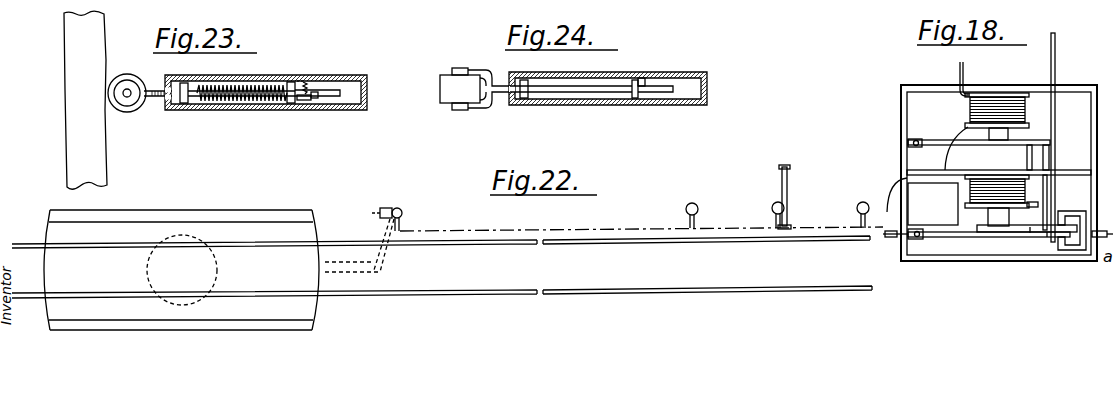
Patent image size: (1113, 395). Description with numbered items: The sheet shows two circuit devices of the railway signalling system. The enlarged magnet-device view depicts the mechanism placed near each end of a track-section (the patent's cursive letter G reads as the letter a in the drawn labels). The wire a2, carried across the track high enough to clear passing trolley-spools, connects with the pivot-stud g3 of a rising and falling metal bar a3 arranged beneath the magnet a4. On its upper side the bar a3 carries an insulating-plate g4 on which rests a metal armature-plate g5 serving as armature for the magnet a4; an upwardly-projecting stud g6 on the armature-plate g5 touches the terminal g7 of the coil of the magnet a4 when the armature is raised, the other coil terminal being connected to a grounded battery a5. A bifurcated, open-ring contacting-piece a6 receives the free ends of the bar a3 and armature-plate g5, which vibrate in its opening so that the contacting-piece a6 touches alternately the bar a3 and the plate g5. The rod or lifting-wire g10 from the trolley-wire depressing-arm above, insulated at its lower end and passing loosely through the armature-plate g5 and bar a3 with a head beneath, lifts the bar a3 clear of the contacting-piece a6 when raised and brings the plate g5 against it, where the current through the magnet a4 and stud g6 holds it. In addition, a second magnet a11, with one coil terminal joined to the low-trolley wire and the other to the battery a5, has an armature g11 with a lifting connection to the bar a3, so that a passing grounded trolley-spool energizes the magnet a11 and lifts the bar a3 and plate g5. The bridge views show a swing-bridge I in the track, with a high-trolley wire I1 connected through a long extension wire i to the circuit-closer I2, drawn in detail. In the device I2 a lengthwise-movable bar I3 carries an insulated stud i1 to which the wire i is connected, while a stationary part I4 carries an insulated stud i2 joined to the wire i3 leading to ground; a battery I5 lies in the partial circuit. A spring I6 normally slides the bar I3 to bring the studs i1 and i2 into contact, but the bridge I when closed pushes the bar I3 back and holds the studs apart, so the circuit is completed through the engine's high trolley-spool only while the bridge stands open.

In FIG. 22, the swing-bridge I is at (181, 270).
In FIG. 22, the high-trolley wire I1 is at (760, 198).
In FIG. 23, the circuit-closing device I2 is at (266, 77).
In FIG. 24, the circuit-closing device I2 is at (643, 78).
In FIG. 22, the circuit-closing device I2 is at (359, 253).
In FIG. 23, the lengthwise-movable bar I3 is at (327, 92).
In FIG. 24, the lengthwise-movable bar I3 is at (655, 93).
In FIG. 23, the stationary part I4 is at (290, 97).
In FIG. 22, the battery I5 is at (388, 208).
In FIG. 23, the spring I6 is at (268, 100).
In FIG. 23, the extension wire i is at (310, 78).
In FIG. 22, the extension wire i is at (641, 217).
In FIG. 23, the insulated stud or binding-post i1 is at (316, 98).
In FIG. 23, the insulated binding-post or stud i2 is at (301, 101).
In FIG. 23, the ground wire i3 is at (298, 80).
In FIG. 18, the cross-track wire (G²) a2 is at (884, 237).
In FIG. 18, the rising and falling metal bar (G³) a3 is at (1048, 237).
In FIG. 18, the magnet (G⁴) a4 is at (993, 187).
In FIG. 18, the grounded battery (G⁵) a5 is at (933, 204).
In FIG. 18, the bifurcated ring-formed contacting-piece (G⁶) a6 is at (1082, 250).
In FIG. 18, the second magnet (G¹¹) a11 is at (989, 98).
In FIG. 18, the pivot-stud g3 is at (919, 240).
In FIG. 18, the insulating-plate g4 is at (1012, 232).
In FIG. 18, the armature-plate g5 is at (1031, 230).
In FIG. 18, the upwardly-projecting stud g6 is at (1032, 213).
In FIG. 18, the coil terminal g7 is at (1022, 187).
In FIG. 18, the rod or lifting-wire g10 is at (1059, 108).
In FIG. 18, the armature of second magnet g11 is at (947, 140).